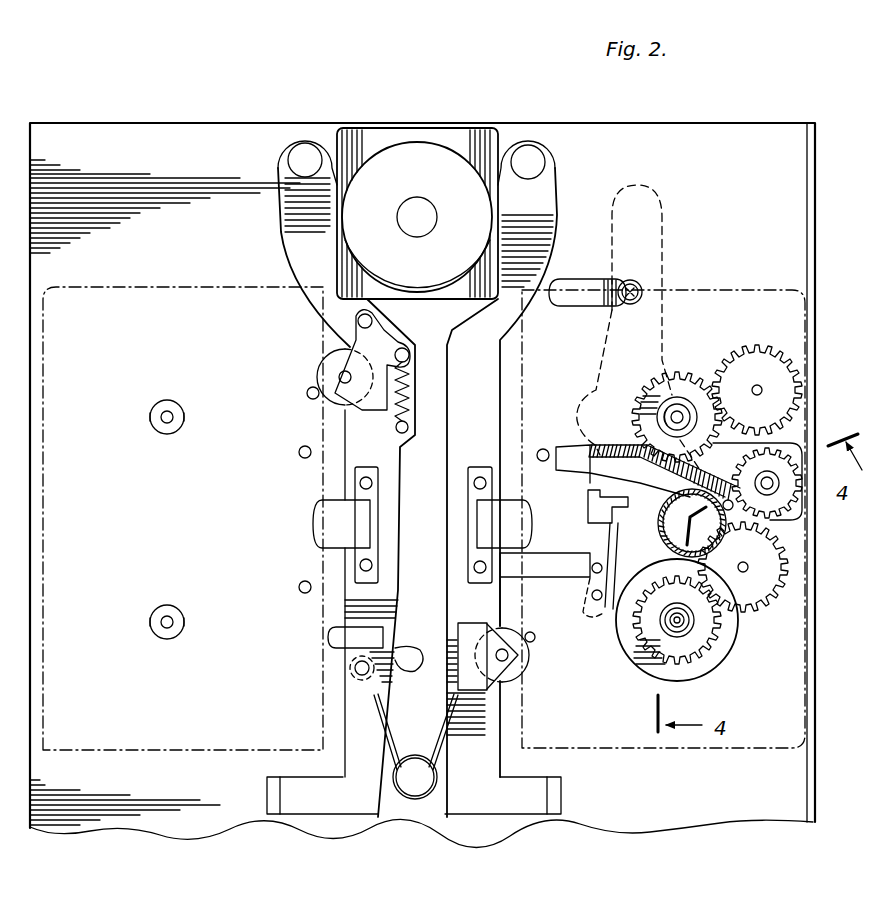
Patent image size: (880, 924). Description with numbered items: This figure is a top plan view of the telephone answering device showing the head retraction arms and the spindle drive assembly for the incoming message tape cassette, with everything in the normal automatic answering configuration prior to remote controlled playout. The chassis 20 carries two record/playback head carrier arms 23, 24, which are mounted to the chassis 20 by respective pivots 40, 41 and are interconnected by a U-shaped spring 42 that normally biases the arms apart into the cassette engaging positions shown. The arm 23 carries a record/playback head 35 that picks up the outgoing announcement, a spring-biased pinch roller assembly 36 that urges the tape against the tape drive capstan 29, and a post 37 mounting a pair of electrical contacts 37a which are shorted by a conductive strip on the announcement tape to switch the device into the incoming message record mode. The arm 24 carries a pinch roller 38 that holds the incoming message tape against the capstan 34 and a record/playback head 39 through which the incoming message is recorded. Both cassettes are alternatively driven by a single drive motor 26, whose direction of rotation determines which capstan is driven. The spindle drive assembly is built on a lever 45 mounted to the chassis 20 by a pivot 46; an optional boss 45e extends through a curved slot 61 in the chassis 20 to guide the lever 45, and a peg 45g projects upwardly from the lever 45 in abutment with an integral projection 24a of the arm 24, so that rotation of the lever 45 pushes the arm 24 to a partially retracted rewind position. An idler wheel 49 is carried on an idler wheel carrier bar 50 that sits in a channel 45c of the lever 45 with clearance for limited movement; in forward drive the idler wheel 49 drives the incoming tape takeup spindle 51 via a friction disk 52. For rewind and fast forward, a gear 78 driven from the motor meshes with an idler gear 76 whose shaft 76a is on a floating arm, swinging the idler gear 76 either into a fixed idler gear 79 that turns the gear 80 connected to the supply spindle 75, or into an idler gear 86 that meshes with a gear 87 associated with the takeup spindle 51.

The chassis 20 is at (97, 118).
The record/playback head carrier arm 23 is at (312, 818).
The record/playback head carrier arm 24 is at (497, 818).
The integral projection 24a is at (553, 580).
The drive motor 26 is at (425, 150).
The tape drive capstan 29 is at (307, 396).
The tape drive capstan 34 is at (535, 643).
The record/playback head 35 is at (372, 536).
The pinch roller assembly 36 is at (320, 363).
The post 37 is at (340, 648).
The electrical contacts 37a is at (326, 631).
The pinch roller 38 is at (510, 678).
The record/playback head 39 is at (480, 515).
The pivot 40 is at (305, 143).
The pivot 41 is at (530, 145).
The U-shaped spring 42 is at (412, 800).
The lever 45 is at (665, 208).
The channel 45c is at (580, 418).
The boss 45e is at (640, 288).
The peg 45g is at (589, 556).
The pivot 46 is at (597, 601).
The idler wheel 49 is at (710, 532).
The idler wheel carrier bar 50 is at (587, 505).
The incoming tape takeup spindle 51 is at (673, 633).
The friction disk 52 is at (722, 664).
The curved slot 61 is at (590, 279).
The supply spindle 75 is at (680, 406).
The idler gear 76 is at (774, 494).
The shaft 76a is at (772, 471).
The gear 78 is at (703, 478).
The fixed idler gear 79 is at (770, 372).
The gear 80 is at (641, 393).
The idler gear 86 is at (772, 594).
The gear 87 is at (735, 640).